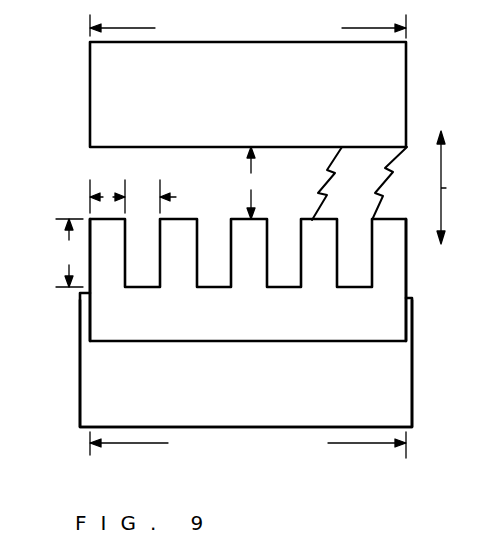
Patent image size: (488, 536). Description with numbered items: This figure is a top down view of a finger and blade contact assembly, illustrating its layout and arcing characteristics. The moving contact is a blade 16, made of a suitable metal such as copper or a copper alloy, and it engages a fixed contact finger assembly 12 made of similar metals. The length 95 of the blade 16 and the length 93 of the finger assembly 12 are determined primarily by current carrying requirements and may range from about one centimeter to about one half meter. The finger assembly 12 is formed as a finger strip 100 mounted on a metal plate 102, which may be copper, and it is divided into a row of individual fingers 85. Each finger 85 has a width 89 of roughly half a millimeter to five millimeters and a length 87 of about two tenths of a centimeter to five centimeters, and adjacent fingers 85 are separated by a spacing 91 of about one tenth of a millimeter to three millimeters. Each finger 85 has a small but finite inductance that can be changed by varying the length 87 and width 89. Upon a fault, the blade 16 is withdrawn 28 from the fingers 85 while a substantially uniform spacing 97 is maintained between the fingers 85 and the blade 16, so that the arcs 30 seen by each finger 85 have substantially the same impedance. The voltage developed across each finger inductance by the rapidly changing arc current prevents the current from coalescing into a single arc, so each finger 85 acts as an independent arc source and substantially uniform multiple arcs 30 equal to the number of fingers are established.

The finger assembly 12 is at (68, 322).
The blade 16 is at (89, 90).
The withdrawal direction of blade 28 is at (446, 188).
The arcs 30 is at (381, 191).
The finger 85 is at (407, 268).
The finger length 87 is at (69, 265).
The finger width 89 is at (98, 196).
The spacing between fingers 91 is at (175, 196).
The length of finger assembly 93 is at (357, 444).
The length of blade 95 is at (354, 27).
The spacing between fingers and blade 97 is at (252, 193).
The finger strip 100 is at (266, 328).
The metal plate 102 is at (80, 377).